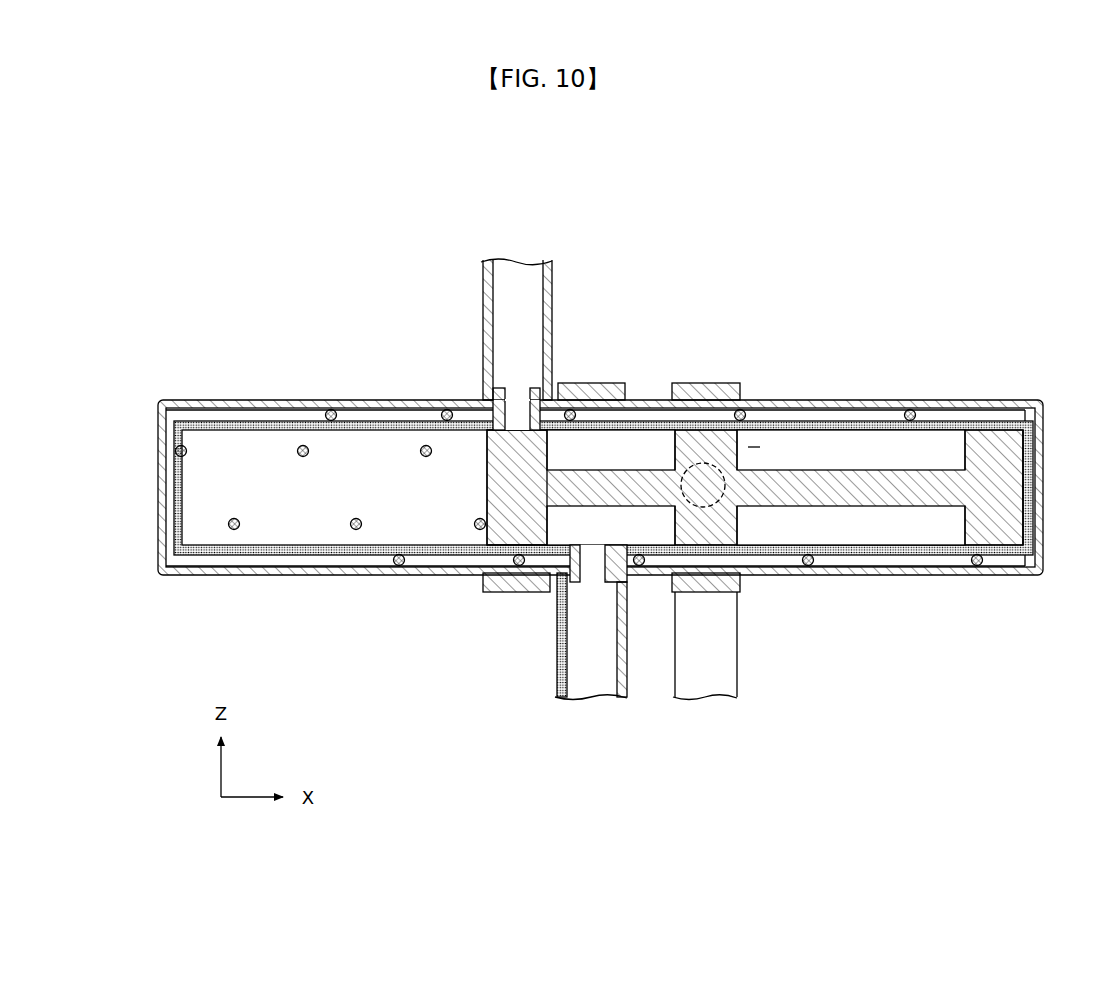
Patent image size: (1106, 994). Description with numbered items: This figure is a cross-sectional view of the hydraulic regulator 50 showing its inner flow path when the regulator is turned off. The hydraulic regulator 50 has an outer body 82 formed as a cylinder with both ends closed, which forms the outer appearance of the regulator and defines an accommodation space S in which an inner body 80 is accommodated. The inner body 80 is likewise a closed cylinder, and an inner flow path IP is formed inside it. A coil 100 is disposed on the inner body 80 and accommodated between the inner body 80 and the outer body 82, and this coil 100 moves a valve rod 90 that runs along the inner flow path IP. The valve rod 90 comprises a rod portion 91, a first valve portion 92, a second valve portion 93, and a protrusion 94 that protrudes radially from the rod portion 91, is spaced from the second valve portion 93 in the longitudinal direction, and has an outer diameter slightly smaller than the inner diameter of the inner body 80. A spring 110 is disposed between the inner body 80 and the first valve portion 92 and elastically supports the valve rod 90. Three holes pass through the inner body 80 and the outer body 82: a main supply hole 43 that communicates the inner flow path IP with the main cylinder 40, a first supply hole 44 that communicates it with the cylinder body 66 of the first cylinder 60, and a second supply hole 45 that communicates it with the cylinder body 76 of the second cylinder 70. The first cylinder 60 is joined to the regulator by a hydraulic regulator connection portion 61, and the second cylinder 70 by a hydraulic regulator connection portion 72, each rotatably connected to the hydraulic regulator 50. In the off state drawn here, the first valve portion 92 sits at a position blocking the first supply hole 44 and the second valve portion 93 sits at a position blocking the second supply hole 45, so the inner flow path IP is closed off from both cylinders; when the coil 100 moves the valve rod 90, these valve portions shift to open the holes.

The main cylinder 40 is at (558, 648).
The main supply hole 43 is at (590, 575).
The first supply hole 44 is at (518, 402).
The second supply hole 45 is at (690, 460).
The hydraulic regulator 50 is at (621, 451).
The first cylinder 60 is at (579, 301).
The hydraulic regulator connection portion 61 is at (498, 590).
The cylinder body 66 is at (490, 296).
The second cylinder 70 is at (754, 636).
The hydraulic regulator connection portion 72 is at (717, 588).
The cylinder body 76 is at (713, 632).
The inner body 80 is at (987, 422).
The outer body 82 is at (1040, 400).
The valve rod 90 is at (755, 476).
The rod portion 91 is at (812, 483).
The first valve portion 92 is at (487, 420).
The second valve portion 93 is at (706, 457).
The protrusion 94 is at (1003, 525).
The coil 100 is at (398, 567).
The spring 110 is at (232, 535).
The inner flow path IP is at (758, 446).
The accommodation space S is at (963, 412).